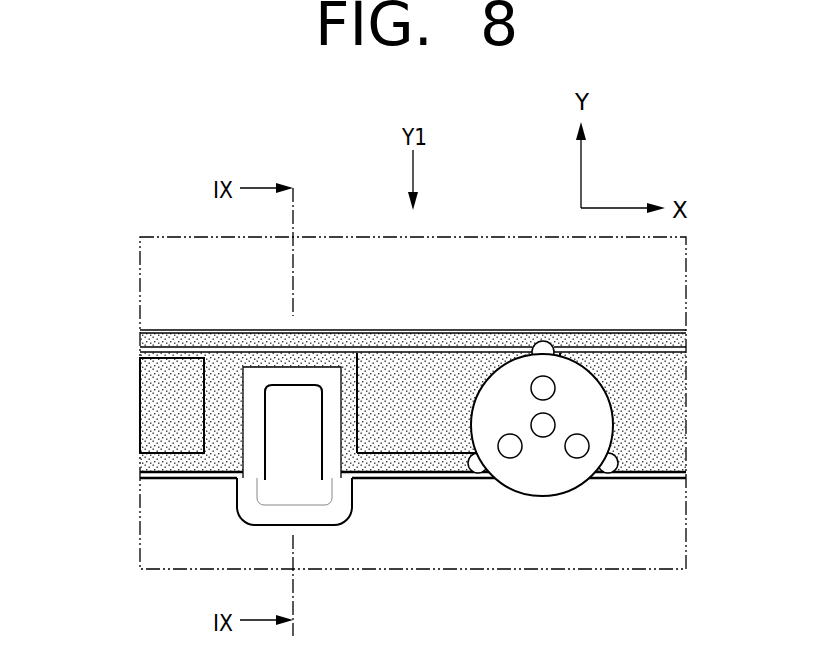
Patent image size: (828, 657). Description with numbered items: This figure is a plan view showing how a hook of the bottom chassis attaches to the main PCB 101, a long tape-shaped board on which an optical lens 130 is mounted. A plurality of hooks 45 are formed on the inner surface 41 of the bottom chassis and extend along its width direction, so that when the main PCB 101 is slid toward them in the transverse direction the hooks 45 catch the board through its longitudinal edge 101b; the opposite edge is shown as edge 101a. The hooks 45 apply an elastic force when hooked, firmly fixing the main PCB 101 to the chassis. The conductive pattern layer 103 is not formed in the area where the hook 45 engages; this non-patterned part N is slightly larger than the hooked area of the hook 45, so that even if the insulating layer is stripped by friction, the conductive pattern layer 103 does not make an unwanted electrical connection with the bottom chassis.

The inner surface 41 is at (155, 520).
The main PCB 101 is at (122, 400).
The upper layer of substrate 101a is at (623, 329).
The longitudinal edge 101b is at (652, 480).
The conductive pattern layer 103 is at (682, 345).
The non-patterned part N is at (310, 372).
The hook 45 is at (295, 453).
The optical lens 130 is at (548, 497).